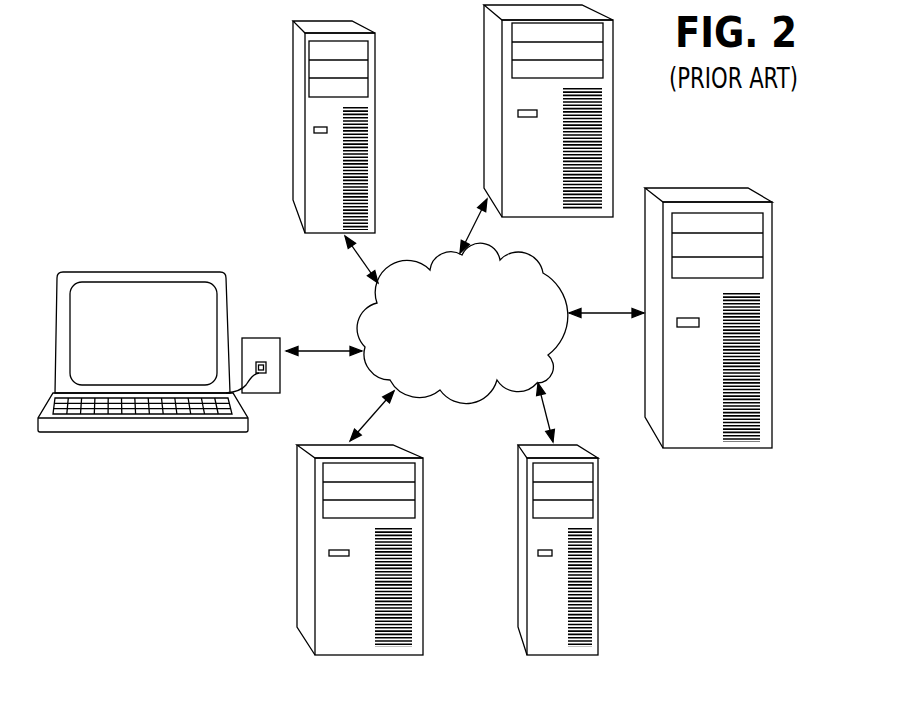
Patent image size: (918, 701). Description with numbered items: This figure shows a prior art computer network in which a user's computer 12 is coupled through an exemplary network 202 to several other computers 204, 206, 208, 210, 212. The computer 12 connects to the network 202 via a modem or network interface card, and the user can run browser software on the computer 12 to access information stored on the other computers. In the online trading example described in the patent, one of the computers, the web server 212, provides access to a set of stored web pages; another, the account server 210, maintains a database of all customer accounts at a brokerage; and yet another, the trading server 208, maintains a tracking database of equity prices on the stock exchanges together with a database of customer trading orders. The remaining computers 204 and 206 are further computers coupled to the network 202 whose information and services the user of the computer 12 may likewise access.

The computer 12 is at (75, 432).
The network 202 is at (455, 405).
The computer 204 is at (292, 173).
The computer 206 is at (482, 148).
The trading server 208 is at (645, 370).
The account server 210 is at (515, 587).
The web server 212 is at (295, 587).